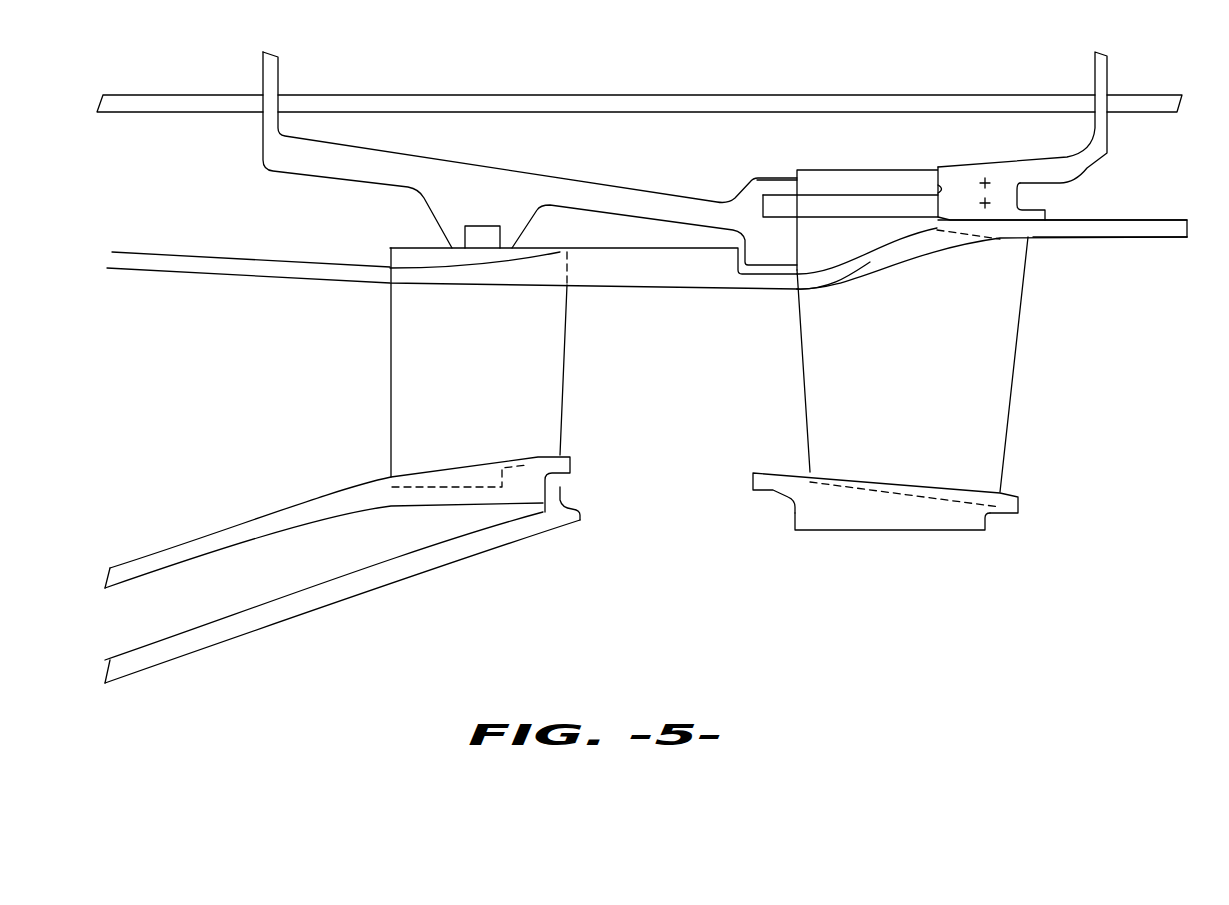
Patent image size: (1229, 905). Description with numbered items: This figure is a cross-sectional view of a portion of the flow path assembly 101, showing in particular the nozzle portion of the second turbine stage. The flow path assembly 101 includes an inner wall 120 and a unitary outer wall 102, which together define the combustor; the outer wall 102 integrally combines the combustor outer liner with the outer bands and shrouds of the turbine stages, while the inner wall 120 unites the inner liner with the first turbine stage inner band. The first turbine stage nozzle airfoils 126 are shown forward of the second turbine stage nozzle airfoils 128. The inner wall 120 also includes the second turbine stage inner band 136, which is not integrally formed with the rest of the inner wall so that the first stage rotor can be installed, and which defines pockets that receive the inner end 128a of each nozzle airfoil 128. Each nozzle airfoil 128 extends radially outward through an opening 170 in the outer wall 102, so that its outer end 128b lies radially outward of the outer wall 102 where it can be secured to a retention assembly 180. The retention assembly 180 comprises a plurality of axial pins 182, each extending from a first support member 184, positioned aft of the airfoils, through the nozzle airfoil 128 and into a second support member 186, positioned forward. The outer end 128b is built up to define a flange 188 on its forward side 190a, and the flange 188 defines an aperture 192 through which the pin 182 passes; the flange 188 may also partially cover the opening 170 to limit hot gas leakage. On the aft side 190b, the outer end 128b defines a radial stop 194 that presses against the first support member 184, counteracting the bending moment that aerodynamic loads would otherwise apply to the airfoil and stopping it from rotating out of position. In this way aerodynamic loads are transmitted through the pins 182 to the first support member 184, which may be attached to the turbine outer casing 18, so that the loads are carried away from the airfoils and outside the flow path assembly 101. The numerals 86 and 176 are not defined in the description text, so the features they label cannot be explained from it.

The turbine outer casing 18 is at (175, 102).
The flow path assembly 101 is at (193, 217).
The unitary outer wall 102 is at (177, 253).
The turbine nozzle platform 86 is at (243, 325).
The inner wall 120 is at (242, 523).
The first turbine stage nozzle airfoil 126 is at (408, 390).
The second turbine stage nozzle airfoil 128 is at (825, 383).
The inner end 128a is at (1030, 495).
The outer end 128b is at (1042, 245).
The second turbine stage inner band 136 is at (858, 513).
The opening 170 is at (843, 270).
The hidden platform edge 176 is at (848, 487).
The retention assembly 180 is at (728, 182).
The axial pin 182 is at (837, 200).
The first support member 184 is at (1083, 163).
The second support member 186 is at (575, 195).
The flange 188 is at (888, 185).
The forward side 190a is at (790, 165).
The aft side 190b is at (1007, 160).
The aperture 192 is at (873, 217).
The radial stop 194 is at (1040, 192).